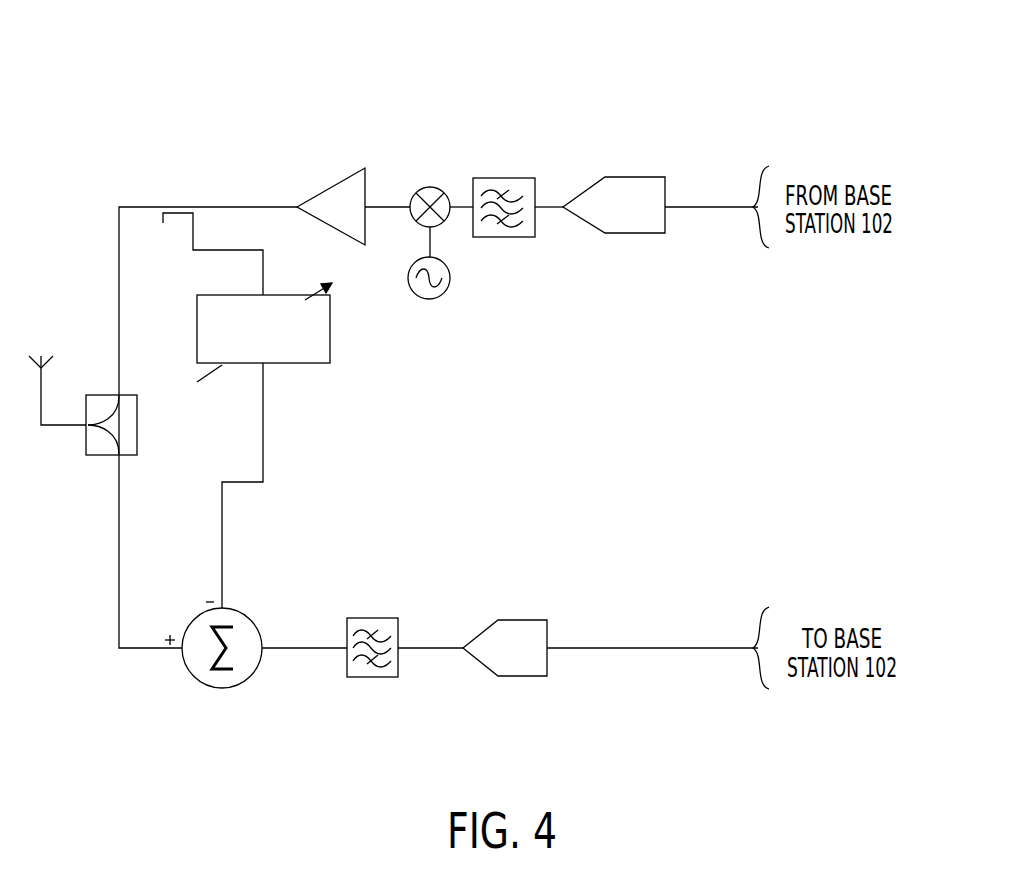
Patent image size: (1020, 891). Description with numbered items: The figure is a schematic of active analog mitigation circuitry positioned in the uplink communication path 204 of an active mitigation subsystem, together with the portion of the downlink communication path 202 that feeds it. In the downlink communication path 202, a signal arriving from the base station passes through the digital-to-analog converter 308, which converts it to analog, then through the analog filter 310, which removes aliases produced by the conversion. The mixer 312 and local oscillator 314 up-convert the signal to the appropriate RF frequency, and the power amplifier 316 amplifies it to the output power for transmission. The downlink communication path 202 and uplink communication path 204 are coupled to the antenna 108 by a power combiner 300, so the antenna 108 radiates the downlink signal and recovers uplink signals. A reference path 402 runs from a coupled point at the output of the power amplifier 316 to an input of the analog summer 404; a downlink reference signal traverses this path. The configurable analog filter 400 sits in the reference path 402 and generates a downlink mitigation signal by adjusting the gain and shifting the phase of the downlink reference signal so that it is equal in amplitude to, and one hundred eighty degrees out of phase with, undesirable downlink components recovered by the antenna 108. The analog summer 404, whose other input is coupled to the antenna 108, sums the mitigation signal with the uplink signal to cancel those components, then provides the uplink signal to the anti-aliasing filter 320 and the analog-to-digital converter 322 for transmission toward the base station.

The downlink communication path 202 is at (567, 103).
The uplink communication path 204 is at (466, 682).
The antenna 108 is at (45, 330).
The power combiner 300 is at (139, 428).
The digital-to-analog converter 308 is at (635, 177).
The analog filter 310 is at (502, 178).
The mixer 312 is at (432, 187).
The local oscillator 314 is at (429, 299).
The power amplifier 316 is at (333, 185).
The anti-aliasing filter 320 is at (375, 618).
The analog-to-digital converter 322 is at (525, 620).
The configurable analog filter 400 is at (302, 363).
The reference path 402 is at (214, 400).
The analog summer 404 is at (220, 688).